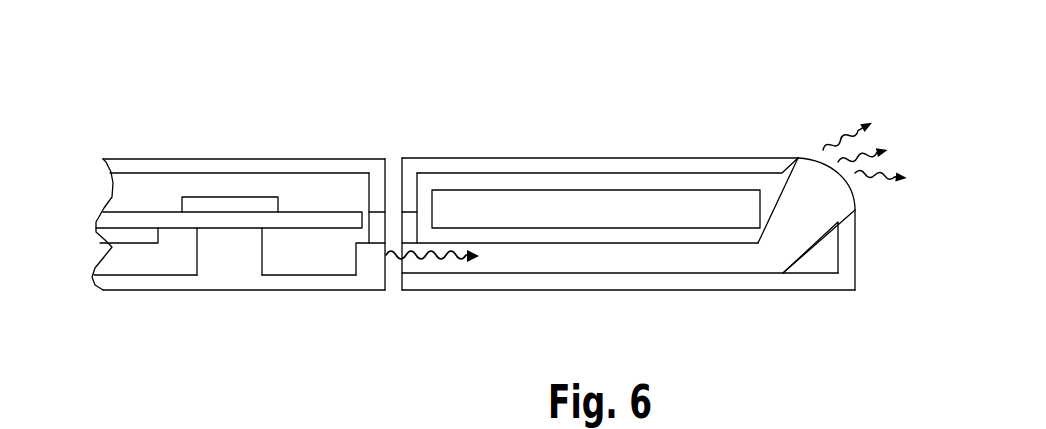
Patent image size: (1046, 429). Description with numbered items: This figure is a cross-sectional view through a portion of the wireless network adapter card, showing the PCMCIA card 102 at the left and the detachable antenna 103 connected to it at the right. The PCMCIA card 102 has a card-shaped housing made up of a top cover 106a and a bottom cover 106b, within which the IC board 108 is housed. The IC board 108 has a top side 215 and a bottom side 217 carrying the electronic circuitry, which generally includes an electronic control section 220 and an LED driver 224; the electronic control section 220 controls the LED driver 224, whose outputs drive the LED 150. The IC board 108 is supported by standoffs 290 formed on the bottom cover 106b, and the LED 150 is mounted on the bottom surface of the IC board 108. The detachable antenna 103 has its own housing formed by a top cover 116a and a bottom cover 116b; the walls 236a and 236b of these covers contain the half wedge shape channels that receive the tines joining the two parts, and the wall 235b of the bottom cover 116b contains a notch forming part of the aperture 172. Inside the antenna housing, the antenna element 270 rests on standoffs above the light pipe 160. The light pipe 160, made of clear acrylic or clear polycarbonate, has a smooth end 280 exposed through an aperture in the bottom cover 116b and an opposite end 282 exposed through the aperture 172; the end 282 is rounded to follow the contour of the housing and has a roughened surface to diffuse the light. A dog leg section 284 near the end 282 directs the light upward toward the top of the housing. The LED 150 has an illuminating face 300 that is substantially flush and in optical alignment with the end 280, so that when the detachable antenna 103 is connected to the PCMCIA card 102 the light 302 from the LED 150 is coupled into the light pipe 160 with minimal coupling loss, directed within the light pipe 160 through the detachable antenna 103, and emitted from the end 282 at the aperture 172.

The PCMCIA card 102 is at (248, 85).
The detachable antenna 103 is at (481, 121).
The top cover 106a is at (137, 165).
The bottom cover 106b is at (137, 282).
The IC board 108 is at (128, 220).
The top cover 116a is at (542, 167).
The bottom cover 116b is at (773, 283).
The LED 150 is at (360, 263).
The light pipe 160 is at (653, 260).
The aperture 172 is at (870, 207).
The top side 215 is at (158, 210).
The bottom side 217 is at (174, 228).
The electronic control section 220 is at (125, 237).
The LED driver 224 is at (229, 205).
The wall 235b is at (852, 262).
The wall 236a is at (378, 197).
The wall 236b is at (377, 228).
The antenna element 270 is at (637, 200).
The end 280 is at (406, 265).
The end 282 is at (808, 150).
The dog leg section 284 is at (811, 268).
The standoffs 290 is at (247, 252).
The illuminating face 300 is at (381, 260).
The light 302 is at (438, 262).